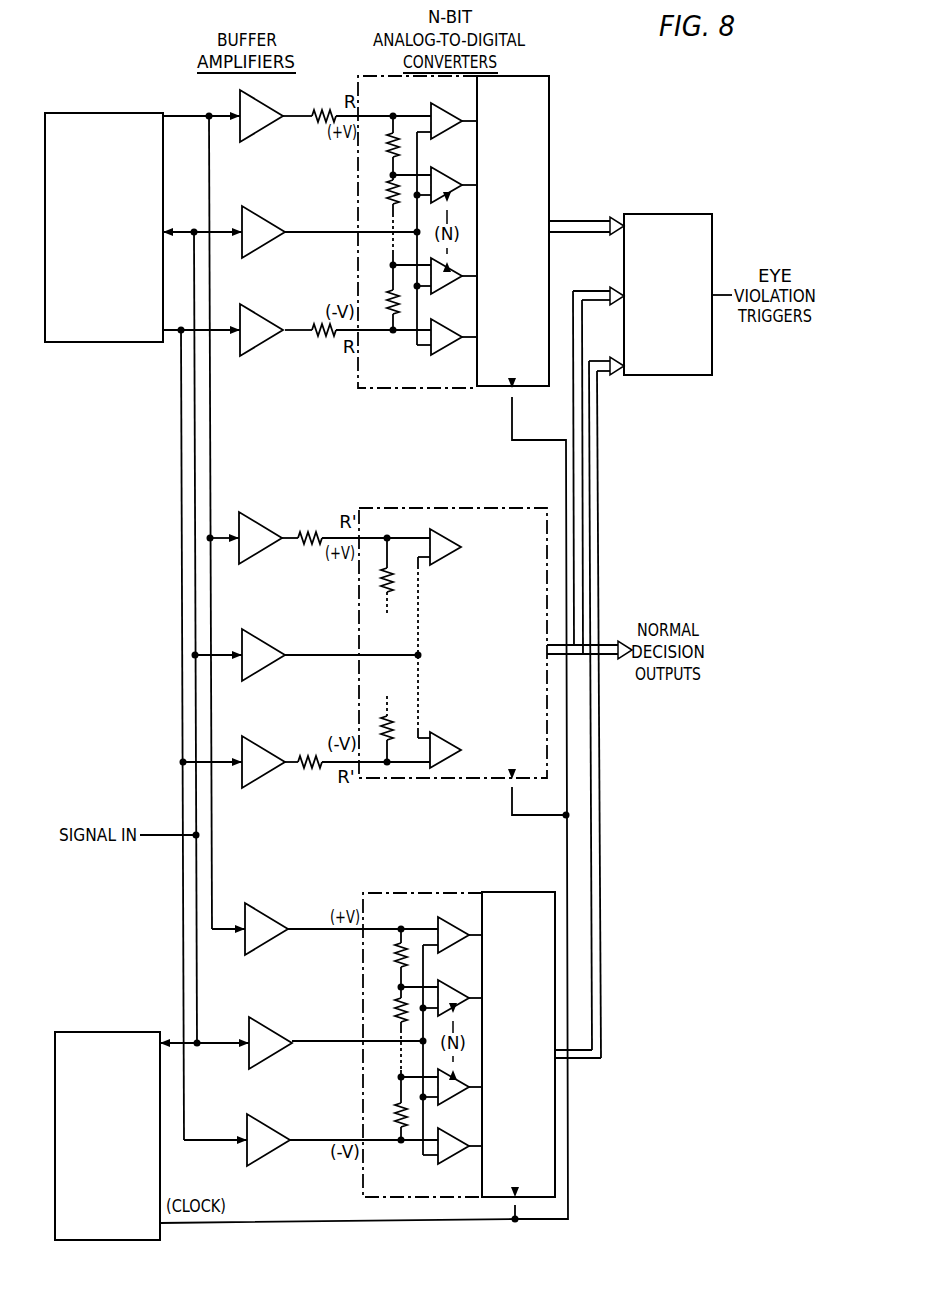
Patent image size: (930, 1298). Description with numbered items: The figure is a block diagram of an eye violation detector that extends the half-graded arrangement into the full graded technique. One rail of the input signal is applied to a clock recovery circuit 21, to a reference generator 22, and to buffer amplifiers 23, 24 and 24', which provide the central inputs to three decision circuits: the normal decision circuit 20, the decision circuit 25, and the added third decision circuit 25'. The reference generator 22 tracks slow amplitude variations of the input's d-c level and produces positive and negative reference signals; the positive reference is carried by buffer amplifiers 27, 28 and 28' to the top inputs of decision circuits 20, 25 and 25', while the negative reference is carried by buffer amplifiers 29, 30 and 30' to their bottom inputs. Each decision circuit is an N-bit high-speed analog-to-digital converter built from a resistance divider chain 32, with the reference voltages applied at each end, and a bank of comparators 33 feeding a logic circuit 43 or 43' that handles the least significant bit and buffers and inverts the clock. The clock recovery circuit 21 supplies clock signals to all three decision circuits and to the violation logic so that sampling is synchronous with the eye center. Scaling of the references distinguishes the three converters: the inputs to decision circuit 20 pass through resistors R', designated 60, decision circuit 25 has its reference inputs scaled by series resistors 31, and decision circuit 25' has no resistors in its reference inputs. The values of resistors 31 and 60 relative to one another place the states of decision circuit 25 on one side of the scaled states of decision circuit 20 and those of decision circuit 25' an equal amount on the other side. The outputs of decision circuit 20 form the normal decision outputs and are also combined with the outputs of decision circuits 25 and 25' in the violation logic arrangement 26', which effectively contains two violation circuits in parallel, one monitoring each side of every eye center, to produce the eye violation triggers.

The decision circuit 20 is at (450, 518).
The clock recovery circuit 21 is at (133, 1040).
The reference generator 22 is at (110, 341).
The buffer amplifier 23 is at (270, 645).
The buffer amplifier 24 is at (263, 222).
The buffer amplifier 24' is at (270, 1031).
The decision circuit 25 is at (417, 249).
The decision circuit 25' is at (422, 1027).
The violation logic arrangement 26' is at (668, 275).
The buffer amplifier 27 is at (265, 528).
The buffer amplifier 28 is at (261, 123).
The buffer amplifier 28' is at (269, 938).
The buffer amplifier 29 is at (270, 752).
The buffer amplifier 30 is at (261, 337).
The buffer amplifier 30' is at (270, 1148).
The series resistors 31 is at (330, 108).
The resistance divider chain 32 is at (388, 144).
The comparators 33 is at (448, 116).
The logic circuit 43 is at (537, 231).
The logic circuit 43' is at (518, 1026).
The resistors R' 60 is at (309, 547).